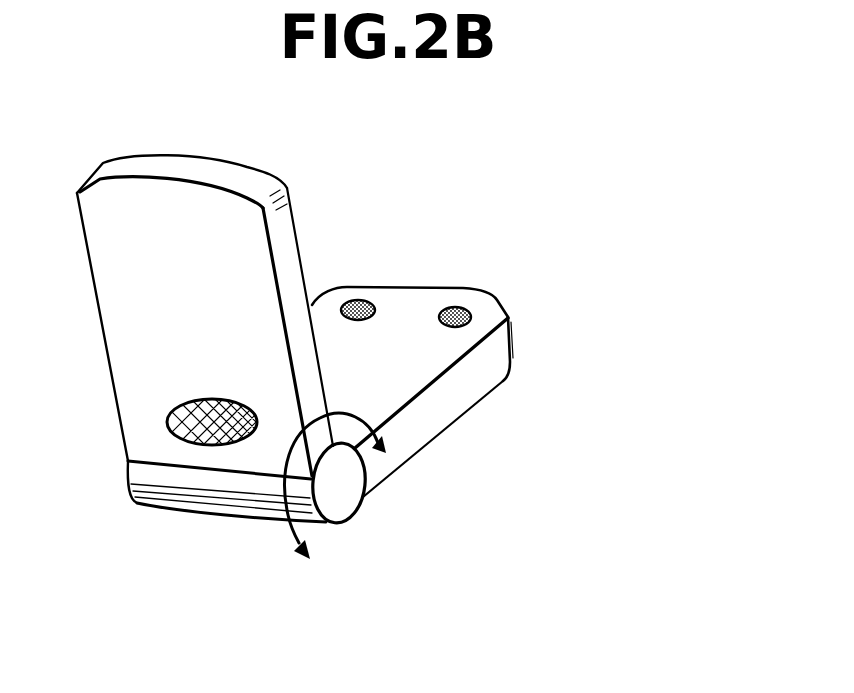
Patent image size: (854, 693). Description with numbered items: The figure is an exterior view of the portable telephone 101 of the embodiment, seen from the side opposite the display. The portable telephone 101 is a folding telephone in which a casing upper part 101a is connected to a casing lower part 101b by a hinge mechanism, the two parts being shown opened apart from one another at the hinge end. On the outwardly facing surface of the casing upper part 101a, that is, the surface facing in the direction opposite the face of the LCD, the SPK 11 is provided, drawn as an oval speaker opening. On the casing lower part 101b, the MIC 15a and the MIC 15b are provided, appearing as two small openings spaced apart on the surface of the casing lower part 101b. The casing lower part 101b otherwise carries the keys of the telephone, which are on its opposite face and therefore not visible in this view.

The portable telephone 101 is at (138, 128).
The casing upper part 101a is at (233, 173).
The casing lower part 101b is at (458, 400).
The SPK 11 is at (180, 405).
The MIC 15a is at (470, 309).
The MIC 15b is at (362, 301).